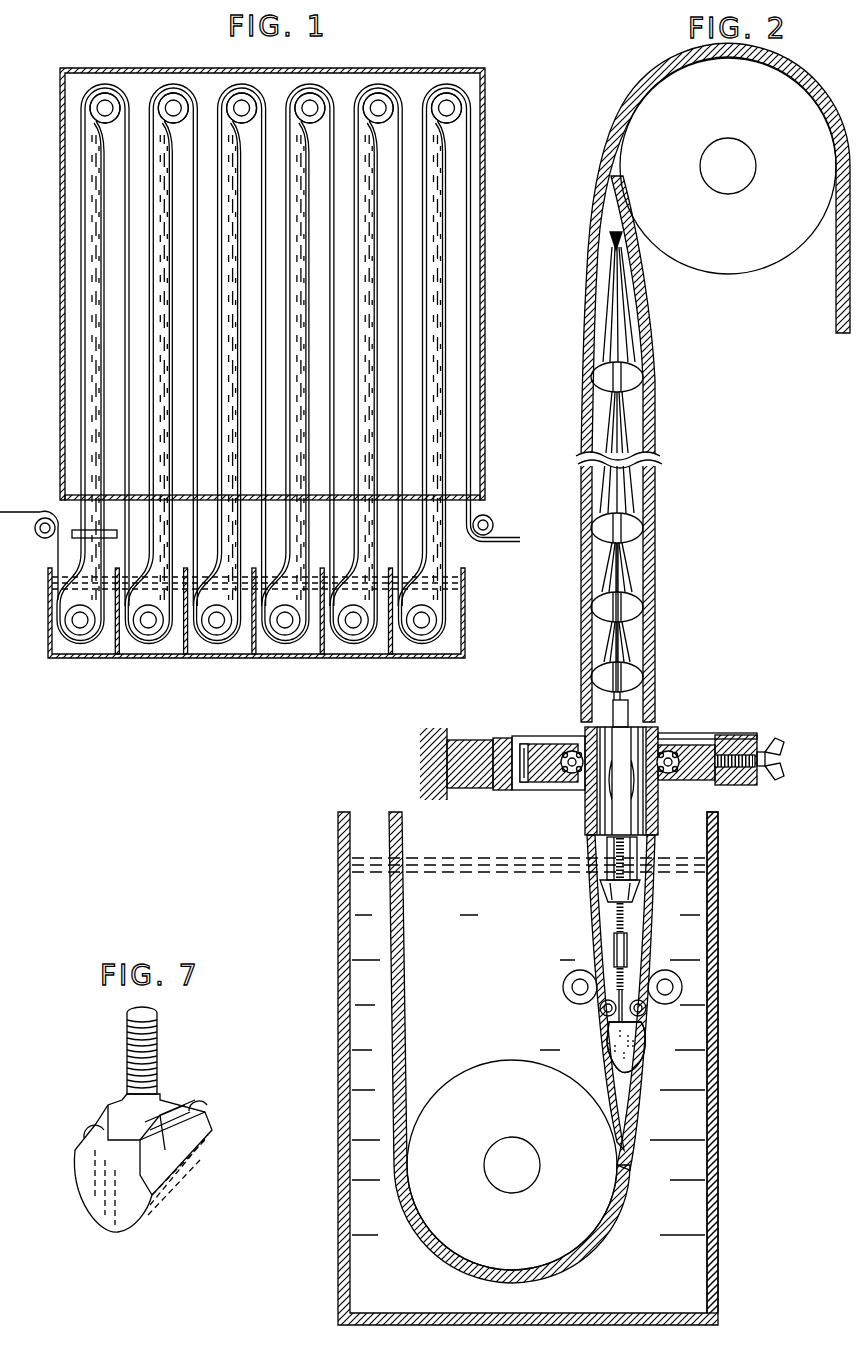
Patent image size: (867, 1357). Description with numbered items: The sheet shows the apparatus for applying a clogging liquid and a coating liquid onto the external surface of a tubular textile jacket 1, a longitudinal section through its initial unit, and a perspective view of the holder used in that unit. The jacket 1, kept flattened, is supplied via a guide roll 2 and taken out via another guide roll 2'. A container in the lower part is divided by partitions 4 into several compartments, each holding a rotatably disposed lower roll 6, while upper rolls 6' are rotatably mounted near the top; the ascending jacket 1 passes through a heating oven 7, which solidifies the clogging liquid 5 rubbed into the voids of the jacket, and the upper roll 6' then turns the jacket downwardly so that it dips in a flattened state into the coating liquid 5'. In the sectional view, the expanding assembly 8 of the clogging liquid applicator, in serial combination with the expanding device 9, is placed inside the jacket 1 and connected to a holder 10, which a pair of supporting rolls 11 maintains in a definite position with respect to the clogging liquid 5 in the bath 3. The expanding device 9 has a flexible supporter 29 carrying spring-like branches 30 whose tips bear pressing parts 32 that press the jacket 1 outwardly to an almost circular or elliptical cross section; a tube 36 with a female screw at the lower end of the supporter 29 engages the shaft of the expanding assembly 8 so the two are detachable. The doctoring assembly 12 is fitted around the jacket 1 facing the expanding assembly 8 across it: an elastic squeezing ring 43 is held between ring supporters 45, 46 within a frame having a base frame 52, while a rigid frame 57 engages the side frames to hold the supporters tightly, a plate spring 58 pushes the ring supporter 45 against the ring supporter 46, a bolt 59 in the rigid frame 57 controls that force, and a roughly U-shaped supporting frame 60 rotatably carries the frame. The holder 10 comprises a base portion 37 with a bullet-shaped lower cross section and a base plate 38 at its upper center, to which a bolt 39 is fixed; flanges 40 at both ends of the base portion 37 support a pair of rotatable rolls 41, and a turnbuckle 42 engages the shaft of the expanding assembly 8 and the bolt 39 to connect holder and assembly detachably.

In FIG. 1, the tubular textile jacket 1 is at (15, 512).
In FIG. 2, the tubular textile jacket 1 is at (650, 487).
In FIG. 1, the guide roll 2 is at (32, 538).
In FIG. 1, the guide roll 2' is at (493, 511).
In FIG. 1, the bath 3 is at (48, 618).
In FIG. 2, the bath 3 is at (337, 1111).
In FIG. 1, the partitions 4 is at (118, 640).
In FIG. 2, the partitions 4 is at (718, 1101).
In FIG. 1, the clogging liquid 5 is at (93, 385).
In FIG. 2, the clogging liquid 5 is at (528, 1034).
In FIG. 1, the coating liquid 5' is at (322, 385).
In FIG. 1, the lower roll 6 is at (245, 646).
In FIG. 2, the lower roll 6 is at (522, 1047).
In FIG. 1, the upper roll 6' is at (282, 82).
In FIG. 2, the upper roll 6' is at (715, 382).
In FIG. 1, the heating oven 7 is at (62, 216).
In FIG. 2, the expanding assembly 8 is at (586, 733).
In FIG. 2, the expanding device 9 is at (630, 420).
In FIG. 2, the holder 10 is at (643, 1058).
In FIG. 7, the holder 10 is at (208, 1062).
In FIG. 2, the supporting rolls 11 is at (573, 1000).
In FIG. 1, the doctoring assembly 12 is at (74, 535).
In FIG. 2, the doctoring assembly 12 is at (702, 735).
In FIG. 2, the supporter 29 is at (626, 656).
In FIG. 2, the branches 30 is at (634, 634).
In FIG. 2, the pressing parts 32 is at (640, 530).
In FIG. 2, the tube 36 is at (646, 690).
In FIG. 2, the base portion 37 is at (626, 1053).
In FIG. 7, the base portion 37 is at (178, 1180).
In FIG. 7, the base plate 38 is at (125, 1105).
In FIG. 7, the bolt 39 is at (128, 1040).
In FIG. 7, the flanges 40 is at (77, 1146).
In FIG. 7, the rotatable rolls 41 is at (96, 1126).
In FIG. 2, the turnbuckle 42 is at (616, 950).
In FIG. 2, the squeezing ring 43 is at (570, 751).
In FIG. 2, the ring supporter 45 is at (691, 780).
In FIG. 2, the ring supporter 46 is at (549, 790).
In FIG. 2, the base frame 52 is at (495, 742).
In FIG. 2, the rigid frame 57 is at (735, 785).
In FIG. 2, the plate spring 58 is at (523, 745).
In FIG. 2, the bolt 59 is at (770, 744).
In FIG. 2, the supporting frame 60 is at (471, 790).